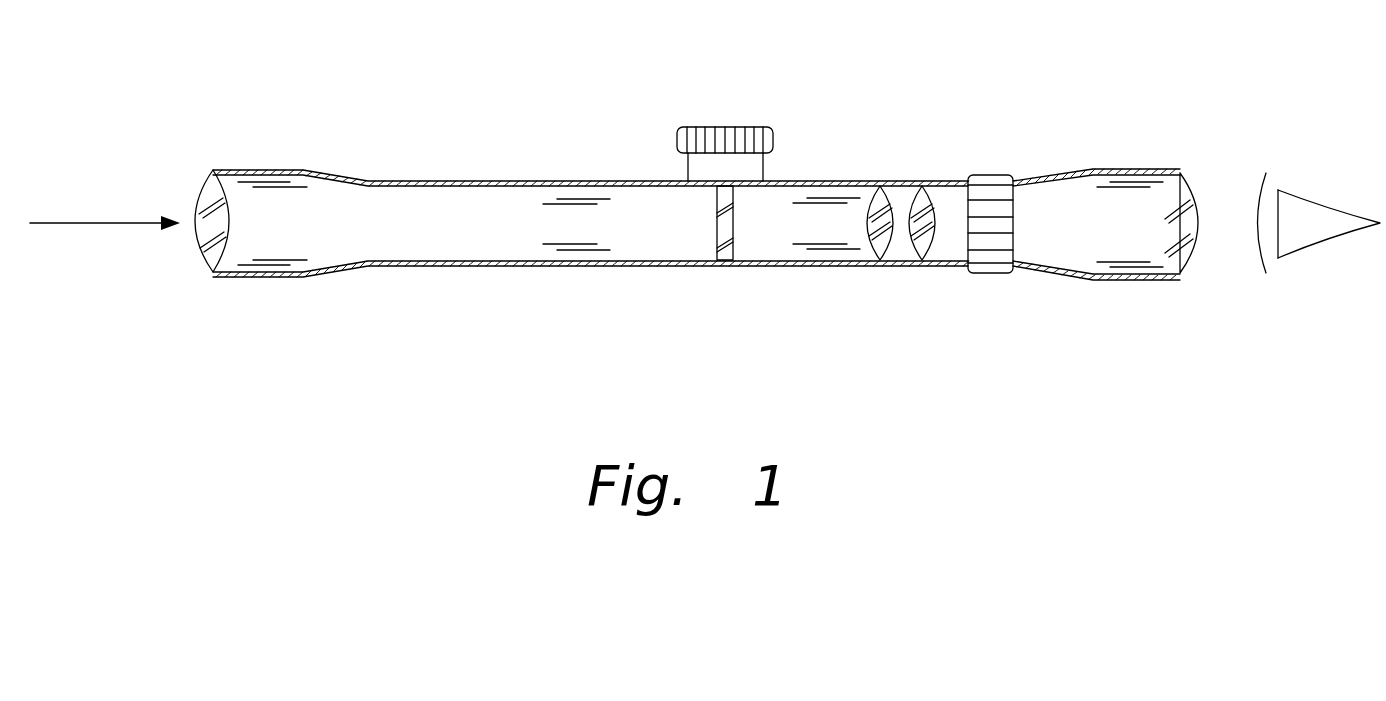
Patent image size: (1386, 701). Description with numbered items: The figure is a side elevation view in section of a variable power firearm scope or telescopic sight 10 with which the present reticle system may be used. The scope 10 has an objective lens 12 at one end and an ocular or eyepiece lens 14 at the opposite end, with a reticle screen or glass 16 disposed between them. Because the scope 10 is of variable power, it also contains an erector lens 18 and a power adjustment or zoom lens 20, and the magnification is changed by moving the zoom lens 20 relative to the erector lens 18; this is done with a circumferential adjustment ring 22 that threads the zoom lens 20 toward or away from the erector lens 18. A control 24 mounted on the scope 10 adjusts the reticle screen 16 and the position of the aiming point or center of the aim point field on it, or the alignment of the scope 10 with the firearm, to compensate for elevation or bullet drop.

The telescopic sight 10 is at (318, 405).
The objective lens 12 is at (197, 188).
The eyepiece lens 14 is at (1192, 187).
The reticle screen 16 is at (713, 232).
The erector lens 18 is at (872, 252).
The power adjustment lens 20 is at (930, 250).
The circumferential adjustment ring 22 is at (985, 175).
The control 24 is at (722, 127).